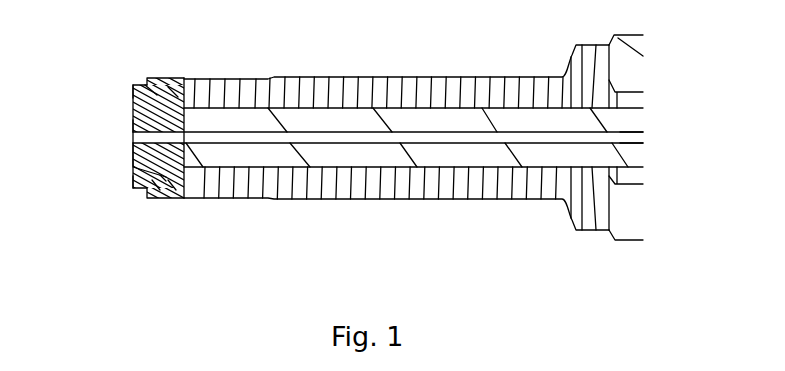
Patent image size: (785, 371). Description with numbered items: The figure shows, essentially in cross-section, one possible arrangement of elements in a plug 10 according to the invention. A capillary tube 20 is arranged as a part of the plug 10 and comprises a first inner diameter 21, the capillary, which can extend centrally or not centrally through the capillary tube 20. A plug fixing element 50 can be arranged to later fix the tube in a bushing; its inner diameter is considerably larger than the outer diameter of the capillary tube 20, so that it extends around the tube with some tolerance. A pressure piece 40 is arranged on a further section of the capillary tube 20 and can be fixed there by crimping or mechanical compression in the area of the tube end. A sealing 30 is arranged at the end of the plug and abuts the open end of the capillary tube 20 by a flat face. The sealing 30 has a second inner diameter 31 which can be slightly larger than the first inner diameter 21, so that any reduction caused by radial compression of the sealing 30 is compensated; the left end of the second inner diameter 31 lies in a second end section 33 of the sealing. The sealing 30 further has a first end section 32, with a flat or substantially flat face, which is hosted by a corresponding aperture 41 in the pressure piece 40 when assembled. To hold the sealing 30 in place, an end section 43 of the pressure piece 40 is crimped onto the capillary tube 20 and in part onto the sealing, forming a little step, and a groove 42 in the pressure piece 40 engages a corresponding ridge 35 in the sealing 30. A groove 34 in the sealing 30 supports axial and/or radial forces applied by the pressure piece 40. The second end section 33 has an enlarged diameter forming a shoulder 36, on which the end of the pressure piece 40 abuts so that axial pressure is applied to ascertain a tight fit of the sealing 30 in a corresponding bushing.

The plug 10 is at (437, 55).
The capillary tube 20 is at (417, 153).
The first inner diameter 21 is at (635, 140).
The sealing 30 is at (137, 118).
The second inner diameter 31 is at (138, 133).
The first end section 32 is at (193, 180).
The second end section 33 is at (133, 163).
The groove 34 is at (157, 193).
The ridge 35 is at (173, 93).
The shoulder 36 is at (133, 92).
The pressure piece 40 is at (485, 190).
The aperture 41 is at (160, 92).
The groove 42 is at (133, 167).
The end section 43 is at (173, 193).
The plug fixing element 50 is at (628, 215).